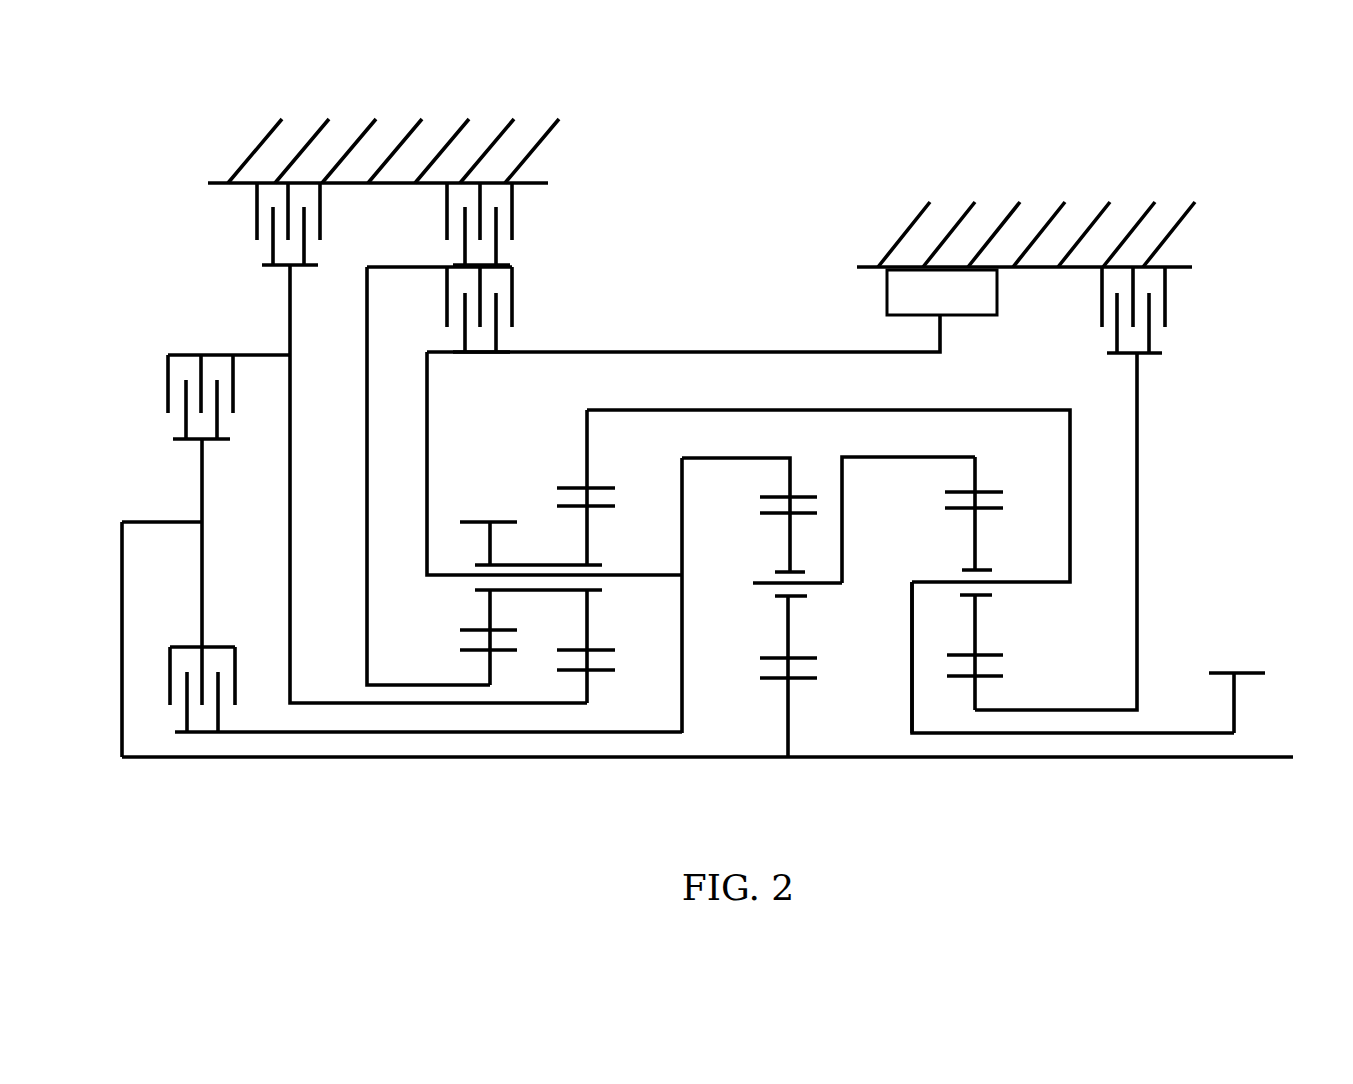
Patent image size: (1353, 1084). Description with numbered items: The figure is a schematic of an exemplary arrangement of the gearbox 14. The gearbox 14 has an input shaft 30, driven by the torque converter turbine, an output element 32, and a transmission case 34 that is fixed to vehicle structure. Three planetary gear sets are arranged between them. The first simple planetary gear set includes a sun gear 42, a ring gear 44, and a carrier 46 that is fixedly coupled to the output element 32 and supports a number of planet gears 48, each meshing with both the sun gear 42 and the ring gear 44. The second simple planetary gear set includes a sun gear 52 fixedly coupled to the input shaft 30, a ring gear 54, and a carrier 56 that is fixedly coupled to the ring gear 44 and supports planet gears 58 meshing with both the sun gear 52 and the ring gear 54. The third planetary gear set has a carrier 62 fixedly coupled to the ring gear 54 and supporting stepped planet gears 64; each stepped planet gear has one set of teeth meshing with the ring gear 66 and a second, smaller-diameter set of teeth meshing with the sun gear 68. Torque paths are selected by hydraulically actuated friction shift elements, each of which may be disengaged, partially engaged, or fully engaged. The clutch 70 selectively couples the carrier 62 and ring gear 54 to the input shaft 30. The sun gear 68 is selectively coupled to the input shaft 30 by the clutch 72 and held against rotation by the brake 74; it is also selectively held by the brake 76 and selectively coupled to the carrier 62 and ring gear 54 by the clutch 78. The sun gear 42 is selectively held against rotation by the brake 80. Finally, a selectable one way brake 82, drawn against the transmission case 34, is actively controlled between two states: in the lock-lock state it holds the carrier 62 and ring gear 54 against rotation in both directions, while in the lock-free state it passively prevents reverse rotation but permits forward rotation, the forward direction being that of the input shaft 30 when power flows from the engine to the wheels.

The gearbox 14 is at (668, 176).
The input shaft 30 is at (1108, 760).
The output element 32 is at (1235, 695).
The transmission case 34 is at (900, 238).
The sun gear 42 is at (977, 698).
The ring gear 44 is at (975, 470).
The carrier 46 is at (912, 620).
The planet gears 48 is at (977, 540).
The sun gear 52 is at (790, 702).
The ring gear 54 is at (790, 480).
The carrier 56 is at (845, 498).
The planet gears 58 is at (788, 623).
The carrier 62 is at (427, 490).
The stepped planet gears 64 is at (587, 535).
The ring gear 66 is at (587, 450).
The sun gear 68 is at (490, 670).
The clutch 70 is at (235, 667).
The clutch 72 is at (235, 373).
The brake 74 is at (257, 213).
The brake 76 is at (512, 210).
The clutch 78 is at (512, 310).
The brake 80 is at (1165, 296).
The selectable one way brake 82 is at (887, 300).